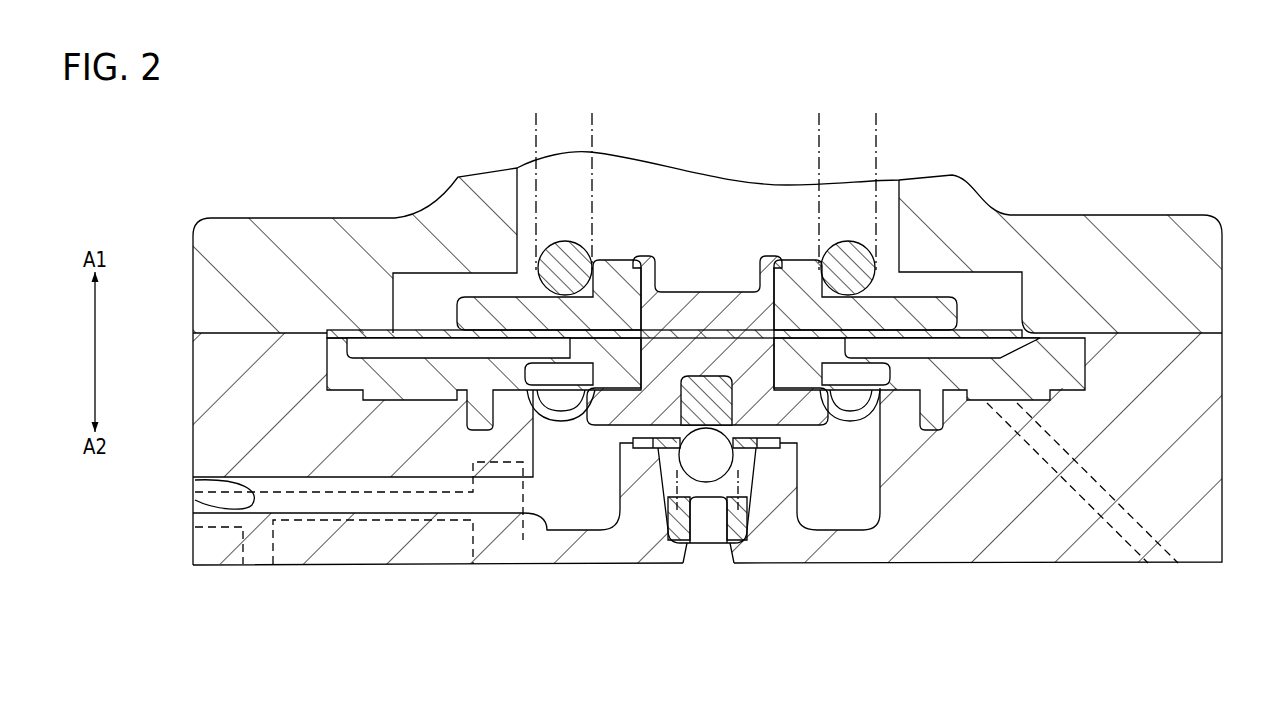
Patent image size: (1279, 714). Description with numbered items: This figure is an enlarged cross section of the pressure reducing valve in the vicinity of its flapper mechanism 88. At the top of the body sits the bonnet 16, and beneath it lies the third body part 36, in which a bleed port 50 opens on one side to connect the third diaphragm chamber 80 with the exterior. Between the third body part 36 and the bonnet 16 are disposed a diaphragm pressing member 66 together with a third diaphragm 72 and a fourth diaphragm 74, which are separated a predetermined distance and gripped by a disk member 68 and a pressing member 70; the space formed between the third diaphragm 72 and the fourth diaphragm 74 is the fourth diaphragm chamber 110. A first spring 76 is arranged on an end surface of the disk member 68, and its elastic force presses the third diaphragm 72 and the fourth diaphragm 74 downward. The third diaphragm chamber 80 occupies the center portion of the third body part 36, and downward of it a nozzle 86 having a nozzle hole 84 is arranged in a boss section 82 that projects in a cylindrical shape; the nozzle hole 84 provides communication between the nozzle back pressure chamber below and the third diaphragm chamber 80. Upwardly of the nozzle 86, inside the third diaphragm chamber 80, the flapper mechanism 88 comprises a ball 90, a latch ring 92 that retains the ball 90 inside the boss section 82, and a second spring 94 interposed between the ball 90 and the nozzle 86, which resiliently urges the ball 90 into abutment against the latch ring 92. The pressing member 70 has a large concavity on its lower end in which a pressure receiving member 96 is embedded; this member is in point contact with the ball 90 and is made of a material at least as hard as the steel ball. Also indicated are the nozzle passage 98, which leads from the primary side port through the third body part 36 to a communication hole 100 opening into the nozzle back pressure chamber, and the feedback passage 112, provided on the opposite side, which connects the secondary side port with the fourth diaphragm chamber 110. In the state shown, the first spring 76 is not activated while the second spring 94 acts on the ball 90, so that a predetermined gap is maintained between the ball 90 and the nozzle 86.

The bonnet 16 is at (1170, 202).
The third body part 36 is at (1210, 377).
The bleed port 50 is at (210, 497).
The diaphragm pressing member 66 is at (1043, 335).
The disk member 68 is at (492, 310).
The pressing member 70 is at (737, 310).
The third diaphragm 72 is at (857, 417).
The fourth diaphragm 74 is at (417, 347).
The first spring 76 is at (567, 258).
The third diaphragm chamber 80 is at (867, 502).
The boss section 82 is at (628, 510).
The nozzle hole 84 is at (683, 530).
The nozzle 86 is at (737, 530).
The flapper mechanism 88 is at (787, 360).
The ball 90 is at (716, 462).
The latch ring 92 is at (637, 439).
The second spring 94 is at (743, 512).
The pressure receiving member 96 is at (695, 390).
The nozzle passage 98 is at (385, 497).
The communication hole 100 is at (508, 540).
The fourth diaphragm chamber 110 is at (393, 330).
The feedback passage 112 is at (1082, 563).